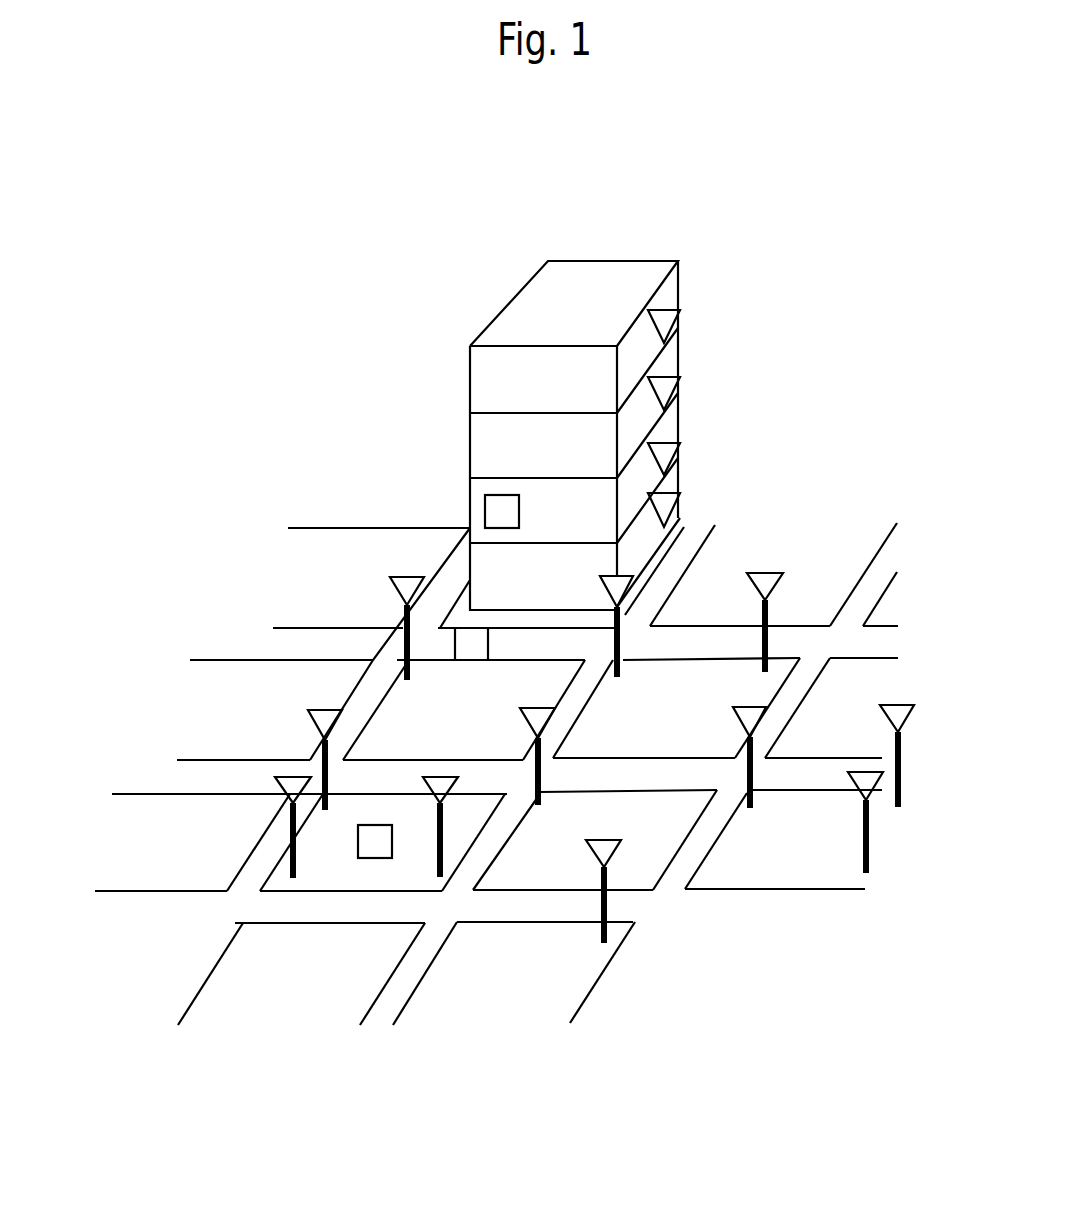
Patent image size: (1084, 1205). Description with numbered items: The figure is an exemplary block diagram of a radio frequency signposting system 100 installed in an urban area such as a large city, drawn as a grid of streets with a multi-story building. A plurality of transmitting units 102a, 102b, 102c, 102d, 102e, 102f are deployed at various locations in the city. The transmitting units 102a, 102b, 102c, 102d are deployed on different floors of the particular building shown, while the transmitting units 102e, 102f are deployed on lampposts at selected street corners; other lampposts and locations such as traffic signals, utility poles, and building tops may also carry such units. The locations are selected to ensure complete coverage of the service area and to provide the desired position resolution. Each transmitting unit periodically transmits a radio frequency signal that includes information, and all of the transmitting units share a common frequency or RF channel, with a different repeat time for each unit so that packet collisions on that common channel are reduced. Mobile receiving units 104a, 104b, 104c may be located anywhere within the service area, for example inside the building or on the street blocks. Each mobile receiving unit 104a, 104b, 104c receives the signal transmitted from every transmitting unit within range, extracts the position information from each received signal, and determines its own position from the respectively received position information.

The radio frequency (RF) signposting system 100 is at (272, 233).
The transmitting unit 102a is at (680, 302).
The transmitting unit 102b is at (680, 368).
The transmitting unit 102c is at (680, 435).
The transmitting unit 102d is at (672, 490).
The transmitting unit 102e is at (767, 573).
The transmitting unit 102f is at (607, 863).
The mobile receiving unit 104a is at (487, 495).
The mobile receiving unit 104b is at (467, 627).
The mobile receiving unit 104c is at (357, 852).